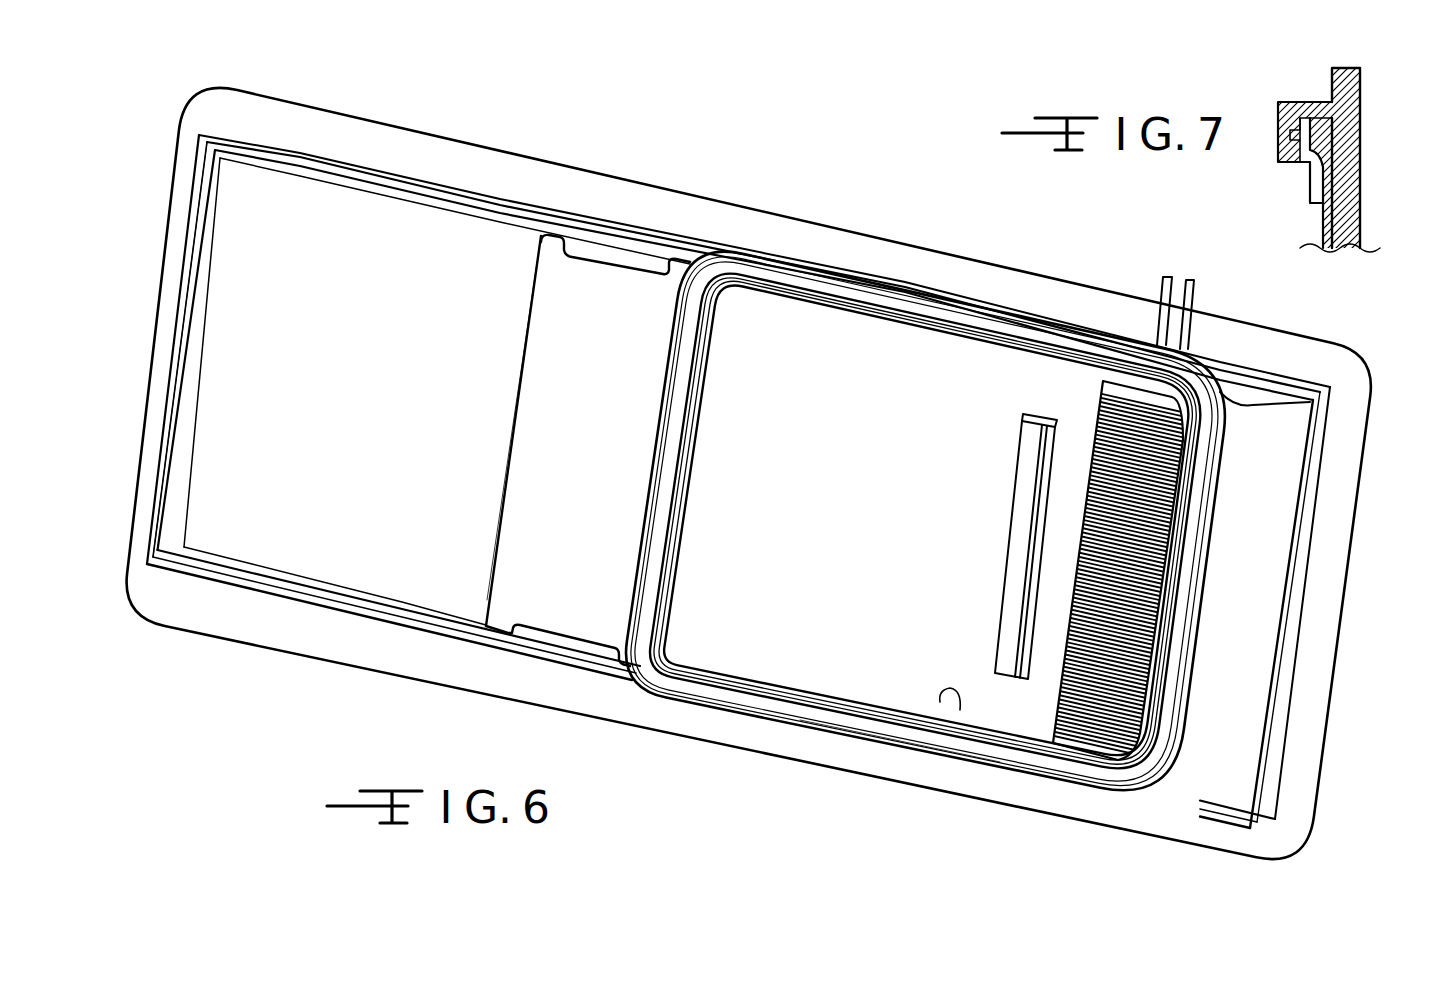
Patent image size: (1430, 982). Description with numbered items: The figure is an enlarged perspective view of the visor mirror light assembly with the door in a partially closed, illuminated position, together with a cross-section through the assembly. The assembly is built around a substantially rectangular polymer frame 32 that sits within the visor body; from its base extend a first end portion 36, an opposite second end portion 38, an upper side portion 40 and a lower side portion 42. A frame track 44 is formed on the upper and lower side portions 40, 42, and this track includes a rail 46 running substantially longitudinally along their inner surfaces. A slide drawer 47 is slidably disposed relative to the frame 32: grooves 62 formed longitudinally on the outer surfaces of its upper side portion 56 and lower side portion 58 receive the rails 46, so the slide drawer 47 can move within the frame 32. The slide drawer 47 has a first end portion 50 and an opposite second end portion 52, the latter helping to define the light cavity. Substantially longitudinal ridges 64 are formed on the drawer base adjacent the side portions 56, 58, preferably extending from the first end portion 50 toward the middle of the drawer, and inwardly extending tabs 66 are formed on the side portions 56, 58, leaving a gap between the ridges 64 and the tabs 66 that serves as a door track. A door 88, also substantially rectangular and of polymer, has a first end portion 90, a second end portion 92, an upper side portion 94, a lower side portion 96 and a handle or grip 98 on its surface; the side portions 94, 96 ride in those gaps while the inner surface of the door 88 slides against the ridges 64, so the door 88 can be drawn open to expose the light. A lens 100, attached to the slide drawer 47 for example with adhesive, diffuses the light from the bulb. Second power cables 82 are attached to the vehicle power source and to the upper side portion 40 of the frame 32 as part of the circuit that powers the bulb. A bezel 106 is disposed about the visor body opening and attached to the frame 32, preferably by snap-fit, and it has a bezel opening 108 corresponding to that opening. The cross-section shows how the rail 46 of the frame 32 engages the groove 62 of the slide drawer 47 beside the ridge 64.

In FIG. 6, the frame 32 is at (306, 96).
In FIG. 7, the frame 32 is at (1370, 170).
In FIG. 6, the first end portion 36 is at (192, 184).
In FIG. 6, the second end portion 38 is at (1268, 806).
In FIG. 6, the upper side portion 40 is at (238, 150).
In FIG. 7, the upper side portion 40 is at (1327, 102).
In FIG. 6, the lower side portion 42 is at (197, 588).
In FIG. 7, the frame track 44 is at (1266, 116).
In FIG. 7, the rail 46 is at (1292, 133).
In FIG. 6, the slide drawer 47 is at (250, 332).
In FIG. 7, the slide drawer 47 is at (1308, 183).
In FIG. 6, the first end portion 50 is at (215, 257).
In FIG. 6, the second end portion 52 is at (1347, 392).
In FIG. 6, the upper side portion 56 is at (688, 262).
In FIG. 7, the upper side portion 56 is at (1357, 112).
In FIG. 6, the lower side portion 58 is at (633, 680).
In FIG. 7, the grooves 62 is at (1322, 205).
In FIG. 6, the ridges 64 is at (425, 212).
In FIG. 7, the ridges 64 is at (1277, 180).
In FIG. 6, the tabs 66 is at (607, 250).
In FIG. 6, the second power cables 82 is at (1173, 296).
In FIG. 6, the door 88 is at (506, 397).
In FIG. 6, the first end portion 90 is at (555, 322).
In FIG. 6, the second end portion 92 is at (1080, 397).
In FIG. 6, the upper side portion 94 is at (808, 330).
In FIG. 6, the lower side portion 96 is at (826, 675).
In FIG. 6, the grip 98 is at (1020, 492).
In FIG. 6, the lens 100 is at (1098, 740).
In FIG. 6, the bezel 106 is at (888, 730).
In FIG. 6, the bezel opening 108 is at (960, 710).